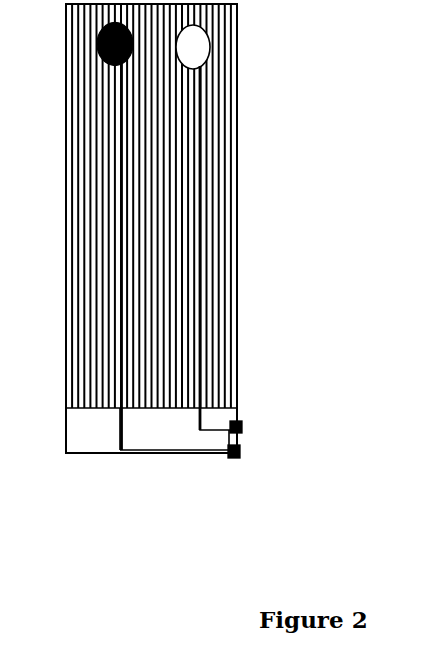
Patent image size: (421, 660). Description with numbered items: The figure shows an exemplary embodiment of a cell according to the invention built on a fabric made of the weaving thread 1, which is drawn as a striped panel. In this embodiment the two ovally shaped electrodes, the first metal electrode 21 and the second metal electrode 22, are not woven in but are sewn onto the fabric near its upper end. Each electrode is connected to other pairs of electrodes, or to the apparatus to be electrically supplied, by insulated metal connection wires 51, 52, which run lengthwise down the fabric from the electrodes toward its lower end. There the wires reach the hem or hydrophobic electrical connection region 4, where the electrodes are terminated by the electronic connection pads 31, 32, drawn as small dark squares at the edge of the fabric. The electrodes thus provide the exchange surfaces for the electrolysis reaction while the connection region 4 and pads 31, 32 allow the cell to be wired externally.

The weaving thread 1 is at (238, 15).
The metal electrode Metal 1 21 is at (209, 72).
The metal electrode Metal 2 22 is at (129, 76).
The insulated metal connection wire 51 is at (124, 242).
The insulated metal connection wire 52 is at (203, 264).
The hydrophobic electrical connection region 4 is at (237, 411).
The electronic connection pad 31 is at (244, 435).
The electronic connection pad 32 is at (227, 459).